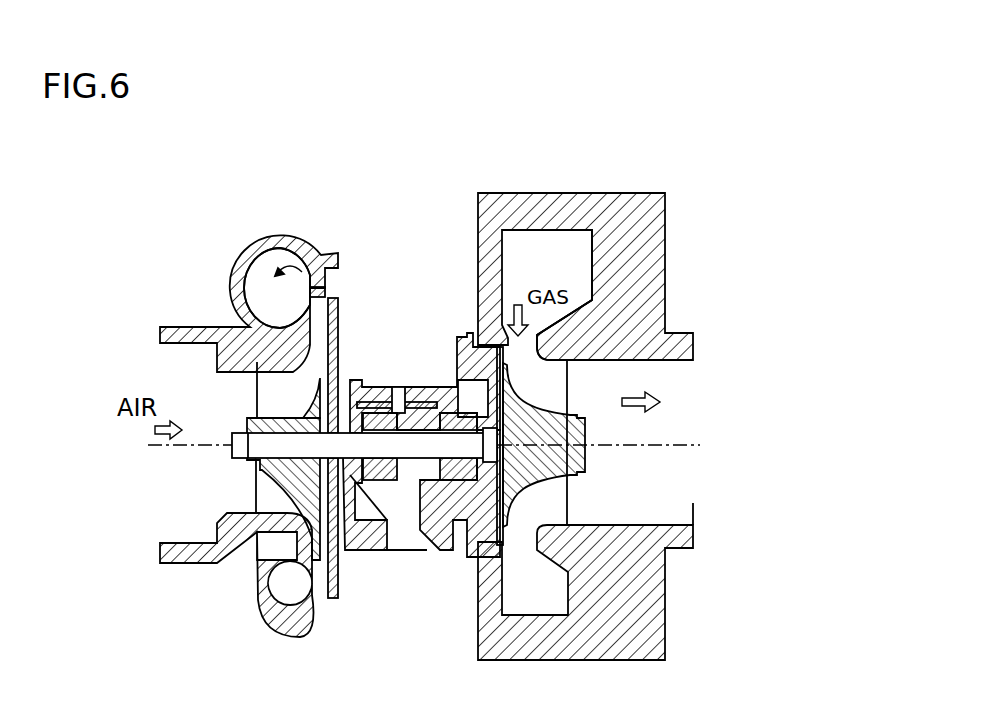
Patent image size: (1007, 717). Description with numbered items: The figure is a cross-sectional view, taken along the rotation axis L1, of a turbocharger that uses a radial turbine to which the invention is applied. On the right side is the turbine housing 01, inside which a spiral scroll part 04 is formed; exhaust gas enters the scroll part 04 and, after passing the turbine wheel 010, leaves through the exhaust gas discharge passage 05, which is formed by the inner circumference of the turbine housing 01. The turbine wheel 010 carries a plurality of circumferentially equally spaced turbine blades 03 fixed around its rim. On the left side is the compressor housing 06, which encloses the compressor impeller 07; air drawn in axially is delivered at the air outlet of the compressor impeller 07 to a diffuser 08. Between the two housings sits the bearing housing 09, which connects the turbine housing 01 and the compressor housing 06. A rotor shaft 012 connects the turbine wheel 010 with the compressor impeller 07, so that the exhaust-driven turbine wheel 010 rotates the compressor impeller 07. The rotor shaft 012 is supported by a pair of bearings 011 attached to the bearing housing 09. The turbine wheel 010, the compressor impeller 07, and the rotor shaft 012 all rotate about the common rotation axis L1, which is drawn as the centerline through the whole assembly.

The turbine housing 01 is at (578, 200).
The turbine blades 03 is at (542, 382).
The spiral scroll part 04 is at (521, 248).
The exhaust gas discharge passage 05 is at (660, 418).
The compressor housing 06 is at (257, 241).
The compressor impeller 07 is at (262, 400).
The diffuser 08 is at (326, 297).
The bearing housing 09 is at (417, 387).
The turbine wheel 010 is at (583, 470).
The bearings 011 is at (395, 462).
The rotor shaft 012 is at (412, 450).
The rotation axis L1 is at (672, 446).